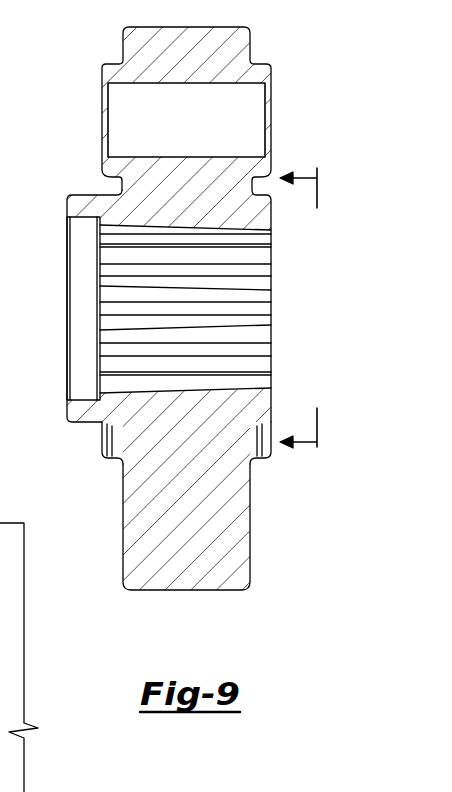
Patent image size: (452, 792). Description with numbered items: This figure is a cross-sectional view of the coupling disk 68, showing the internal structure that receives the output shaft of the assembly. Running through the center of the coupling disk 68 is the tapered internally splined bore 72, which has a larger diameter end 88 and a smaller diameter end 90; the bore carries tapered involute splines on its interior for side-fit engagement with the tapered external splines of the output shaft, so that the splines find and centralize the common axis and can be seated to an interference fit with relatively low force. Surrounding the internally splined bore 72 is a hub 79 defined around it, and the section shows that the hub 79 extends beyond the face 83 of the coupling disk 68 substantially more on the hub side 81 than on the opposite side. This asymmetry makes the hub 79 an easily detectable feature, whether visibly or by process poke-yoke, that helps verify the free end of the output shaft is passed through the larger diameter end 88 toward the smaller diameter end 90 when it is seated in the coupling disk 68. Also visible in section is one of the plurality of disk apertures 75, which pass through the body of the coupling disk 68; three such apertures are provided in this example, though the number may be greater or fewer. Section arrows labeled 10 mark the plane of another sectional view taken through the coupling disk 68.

The coupling disk 68 is at (222, 592).
The tapered internally splined bore 72 is at (271, 288).
The disk aperture 75 is at (114, 115).
The hub 79 is at (91, 195).
The hub side 81 is at (125, 481).
The face 83 is at (123, 536).
The larger diameter end 88 is at (97, 311).
The smaller diameter end 90 is at (265, 362).
The section line 10- 10 is at (319, 311).